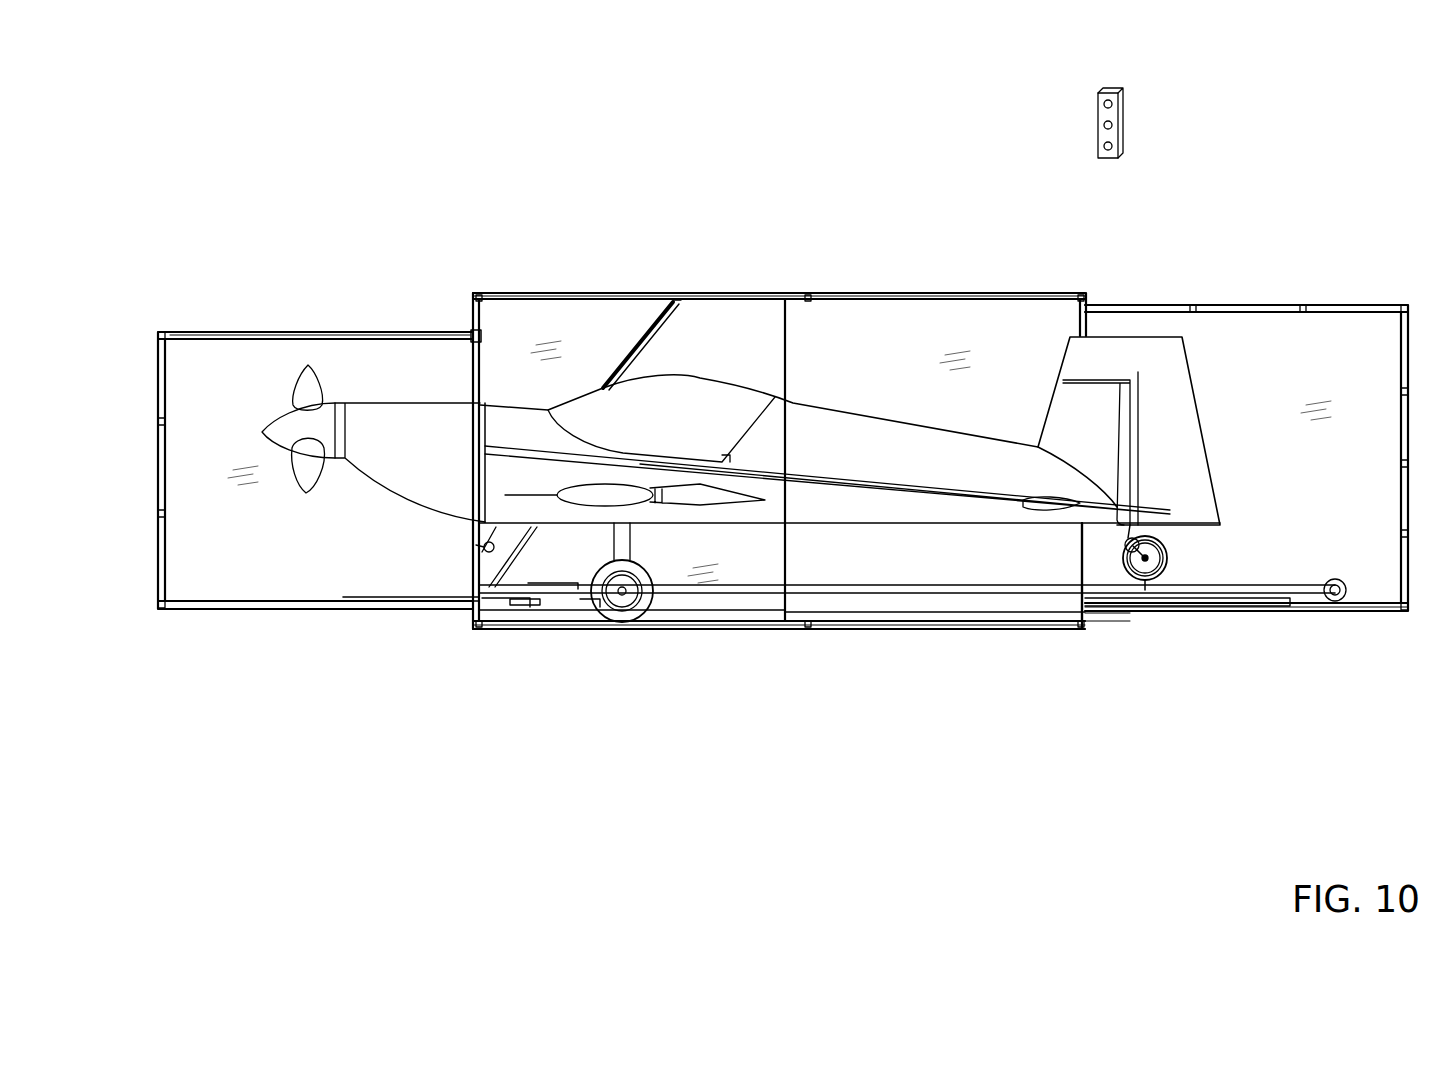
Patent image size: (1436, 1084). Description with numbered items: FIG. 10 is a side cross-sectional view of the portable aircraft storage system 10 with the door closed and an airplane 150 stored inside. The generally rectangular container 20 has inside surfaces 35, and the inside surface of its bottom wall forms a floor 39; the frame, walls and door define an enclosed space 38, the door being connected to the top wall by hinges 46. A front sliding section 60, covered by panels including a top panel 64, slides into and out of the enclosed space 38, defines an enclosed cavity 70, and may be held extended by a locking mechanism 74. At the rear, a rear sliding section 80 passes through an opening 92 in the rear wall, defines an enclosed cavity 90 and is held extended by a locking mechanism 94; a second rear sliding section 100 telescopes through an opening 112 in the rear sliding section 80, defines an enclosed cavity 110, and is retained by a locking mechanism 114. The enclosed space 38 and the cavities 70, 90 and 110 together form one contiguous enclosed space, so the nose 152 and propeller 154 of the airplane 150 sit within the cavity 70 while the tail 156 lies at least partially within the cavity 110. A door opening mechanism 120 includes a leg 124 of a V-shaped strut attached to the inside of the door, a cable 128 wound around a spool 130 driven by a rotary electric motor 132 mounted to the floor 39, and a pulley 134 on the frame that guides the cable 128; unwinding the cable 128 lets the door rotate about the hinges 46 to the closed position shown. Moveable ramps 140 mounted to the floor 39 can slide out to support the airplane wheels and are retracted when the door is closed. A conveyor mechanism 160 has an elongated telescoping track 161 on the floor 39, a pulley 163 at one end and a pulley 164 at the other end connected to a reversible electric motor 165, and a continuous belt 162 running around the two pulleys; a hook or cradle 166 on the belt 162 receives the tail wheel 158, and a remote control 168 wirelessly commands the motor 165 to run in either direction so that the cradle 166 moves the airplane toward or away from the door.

The portable aircraft storage system 10 is at (313, 188).
The container 20 is at (788, 285).
The inside surfaces 35 is at (785, 362).
The enclosed space 38 is at (667, 548).
The floor 39 is at (735, 607).
The hinges 46 is at (478, 300).
The front sliding section 60 is at (222, 328).
The top panel 64 is at (332, 330).
The enclosed cavity 70 is at (290, 550).
The locking mechanism 74 is at (475, 336).
The rear sliding section 80 is at (955, 292).
The enclosed cavity 90 is at (1000, 545).
The opening 92 is at (822, 626).
The locking mechanism 94 is at (775, 300).
The rear sliding section 100 is at (1250, 305).
The enclosed cavity 110 is at (1305, 360).
The opening 112 is at (1115, 612).
The locking mechanism 114 is at (1085, 305).
The door opening mechanism 120 is at (537, 665).
The leg 124 is at (652, 348).
The cable 128 is at (603, 388).
The spool 130 is at (496, 605).
The rotary electric motor 132 is at (598, 612).
The pulley 134 is at (475, 600).
The moveable ramps 140 is at (420, 595).
The airplane 150 is at (550, 400).
The nose 152 is at (322, 490).
The propeller 154 is at (292, 490).
The tail 156 is at (1200, 440).
The tail wheel 158 is at (625, 612).
The conveyor mechanism 160 is at (1326, 648).
The elongated telescoping track 161 is at (1040, 612).
The continuous belt 162 is at (1300, 605).
The pulley 163 is at (488, 560).
The pulley 164 is at (1340, 600).
The reversible electric motor 165 is at (1335, 582).
The cradle 166 is at (1170, 560).
The remote control 168 is at (1097, 122).